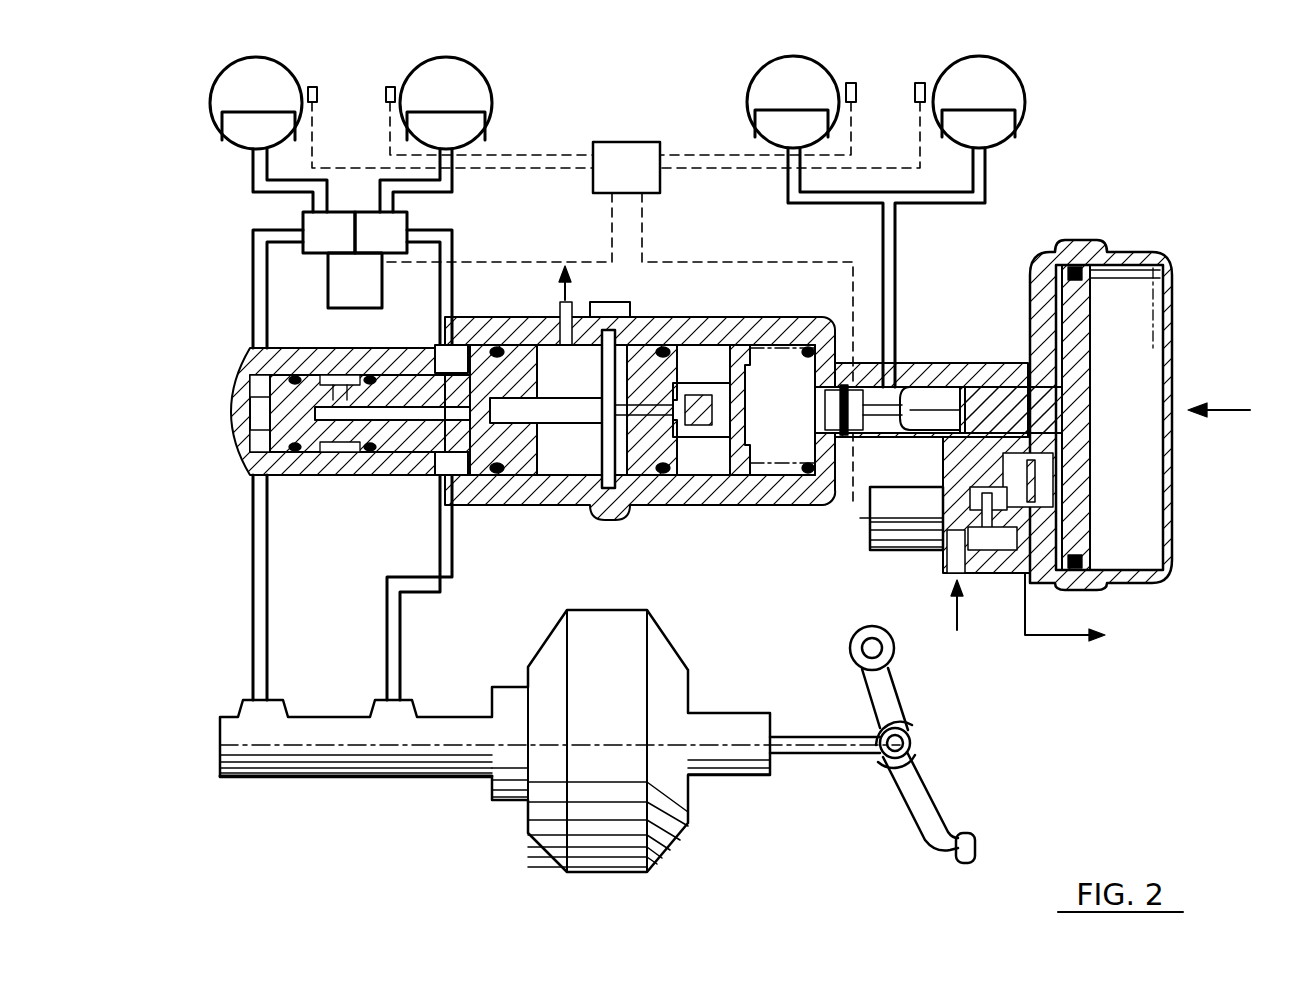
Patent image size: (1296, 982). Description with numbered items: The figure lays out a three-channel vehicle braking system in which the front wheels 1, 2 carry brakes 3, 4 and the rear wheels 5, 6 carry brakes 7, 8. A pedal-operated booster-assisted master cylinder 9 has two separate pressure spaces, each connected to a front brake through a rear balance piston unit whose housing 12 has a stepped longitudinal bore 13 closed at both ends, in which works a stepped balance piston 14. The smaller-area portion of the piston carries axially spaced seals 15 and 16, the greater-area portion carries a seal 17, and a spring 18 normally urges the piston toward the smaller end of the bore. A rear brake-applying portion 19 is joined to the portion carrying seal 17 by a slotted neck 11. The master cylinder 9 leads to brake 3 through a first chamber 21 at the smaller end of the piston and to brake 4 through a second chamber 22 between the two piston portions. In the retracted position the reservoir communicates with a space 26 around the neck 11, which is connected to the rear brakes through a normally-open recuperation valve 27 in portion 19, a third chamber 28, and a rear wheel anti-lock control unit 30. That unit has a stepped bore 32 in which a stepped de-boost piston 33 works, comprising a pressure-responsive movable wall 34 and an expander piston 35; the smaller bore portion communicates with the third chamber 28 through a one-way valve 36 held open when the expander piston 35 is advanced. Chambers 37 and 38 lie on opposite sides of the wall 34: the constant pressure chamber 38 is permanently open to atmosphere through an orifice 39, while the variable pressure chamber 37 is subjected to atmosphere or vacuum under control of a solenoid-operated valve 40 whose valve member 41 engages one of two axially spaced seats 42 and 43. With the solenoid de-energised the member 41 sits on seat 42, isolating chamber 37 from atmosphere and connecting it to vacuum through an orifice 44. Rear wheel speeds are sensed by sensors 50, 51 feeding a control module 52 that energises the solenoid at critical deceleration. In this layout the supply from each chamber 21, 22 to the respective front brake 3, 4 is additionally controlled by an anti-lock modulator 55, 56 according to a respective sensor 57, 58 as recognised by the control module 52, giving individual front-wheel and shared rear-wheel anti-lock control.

The front wheel 1 is at (237, 83).
The front wheel 2 is at (465, 83).
The front wheel brake 3 is at (245, 130).
The front wheel brake 4 is at (470, 128).
The rear wheel 5 is at (778, 80).
The rear wheel 6 is at (1000, 80).
The rear wheel brake 7 is at (775, 123).
The rear wheel brake 8 is at (990, 138).
The master cylinder 9 is at (462, 776).
The slotted neck 11 is at (580, 460).
The housing 12 is at (711, 330).
The stepped longitudinal bore 13 is at (612, 335).
The stepped balance piston 14 is at (407, 370).
The seal 15 is at (293, 375).
The seal 16 is at (370, 375).
The seal 17 is at (495, 350).
The spring 18 is at (803, 478).
The rear brake-applying portion 19 is at (668, 478).
The first chamber 21 is at (240, 472).
The second chamber 22 is at (440, 465).
The space 26 is at (556, 478).
The recuperation valve 27 is at (702, 440).
The third chamber 28 is at (780, 375).
The rear wheel anti-lock control unit 30 is at (1117, 245).
The stepped bore 32 is at (1042, 313).
The stepped de-boost piston 33 is at (1092, 500).
The pressure-responsive movable wall 34 is at (1075, 357).
The expander piston 35 is at (938, 385).
The one-way valve 36 is at (840, 388).
The variable pressure chamber 37 is at (1062, 283).
The constant pressure chamber 38 is at (1145, 303).
The orifice 39 is at (1172, 412).
The solenoid-operated valve 40 is at (912, 522).
The valve member 41 is at (992, 548).
The seat 42 is at (964, 572).
The seat 43 is at (1042, 574).
The orifice 44 is at (982, 492).
The sensor 50 is at (852, 83).
The sensor 51 is at (920, 83).
The control module 52 is at (608, 184).
The anti-lock modulator 55 is at (305, 215).
The anti-lock modulator 56 is at (410, 222).
The sensor 57 is at (313, 87).
The sensor 58 is at (390, 87).